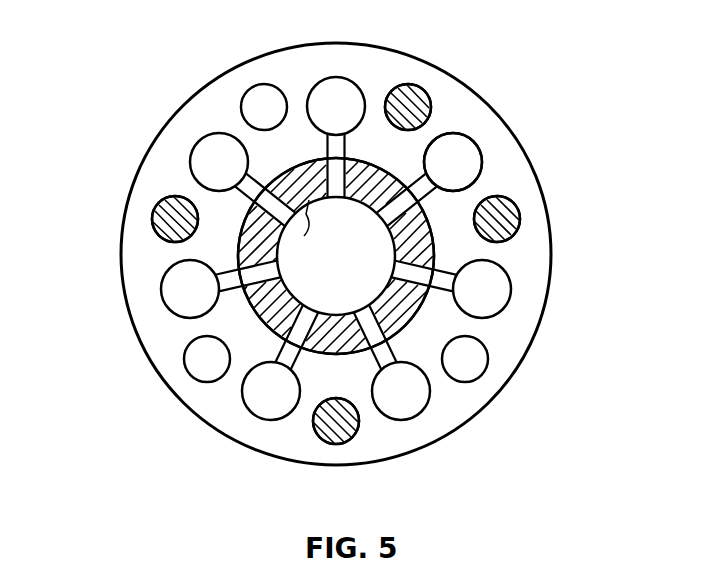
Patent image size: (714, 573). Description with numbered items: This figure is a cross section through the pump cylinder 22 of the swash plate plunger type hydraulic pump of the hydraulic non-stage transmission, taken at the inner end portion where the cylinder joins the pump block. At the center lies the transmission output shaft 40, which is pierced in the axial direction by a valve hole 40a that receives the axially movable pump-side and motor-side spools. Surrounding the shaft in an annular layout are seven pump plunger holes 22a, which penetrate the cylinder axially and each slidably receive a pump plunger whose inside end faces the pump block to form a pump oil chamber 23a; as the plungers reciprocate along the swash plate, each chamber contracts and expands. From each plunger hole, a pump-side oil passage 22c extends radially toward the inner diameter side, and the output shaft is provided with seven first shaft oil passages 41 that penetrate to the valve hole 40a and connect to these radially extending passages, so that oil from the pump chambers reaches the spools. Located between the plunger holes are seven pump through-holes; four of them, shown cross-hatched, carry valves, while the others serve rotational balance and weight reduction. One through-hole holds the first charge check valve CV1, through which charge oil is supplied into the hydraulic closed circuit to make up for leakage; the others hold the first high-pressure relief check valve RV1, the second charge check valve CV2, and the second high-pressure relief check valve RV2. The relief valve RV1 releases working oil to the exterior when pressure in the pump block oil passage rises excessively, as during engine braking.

The pump cylinder 22 is at (337, 48).
The pump plunger holes 22a is at (462, 143).
The pump-side oil passages 22c is at (425, 205).
The pump oil chamber 23a is at (467, 165).
The transmission output shaft 40 is at (267, 312).
The valve hole 40a is at (307, 231).
The first shaft oil passages 41 is at (383, 224).
The first high-pressure relief check valve RV1 is at (408, 100).
The second high-pressure relief check valve RV2 is at (157, 207).
The first charge check valve CV1 is at (317, 422).
The second charge check valve CV2 is at (522, 238).